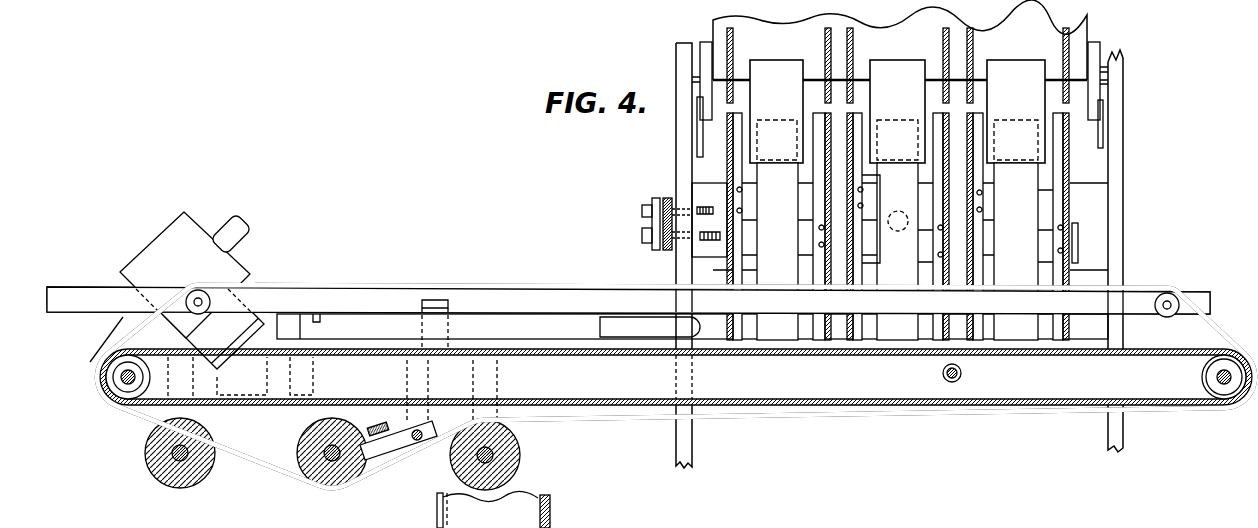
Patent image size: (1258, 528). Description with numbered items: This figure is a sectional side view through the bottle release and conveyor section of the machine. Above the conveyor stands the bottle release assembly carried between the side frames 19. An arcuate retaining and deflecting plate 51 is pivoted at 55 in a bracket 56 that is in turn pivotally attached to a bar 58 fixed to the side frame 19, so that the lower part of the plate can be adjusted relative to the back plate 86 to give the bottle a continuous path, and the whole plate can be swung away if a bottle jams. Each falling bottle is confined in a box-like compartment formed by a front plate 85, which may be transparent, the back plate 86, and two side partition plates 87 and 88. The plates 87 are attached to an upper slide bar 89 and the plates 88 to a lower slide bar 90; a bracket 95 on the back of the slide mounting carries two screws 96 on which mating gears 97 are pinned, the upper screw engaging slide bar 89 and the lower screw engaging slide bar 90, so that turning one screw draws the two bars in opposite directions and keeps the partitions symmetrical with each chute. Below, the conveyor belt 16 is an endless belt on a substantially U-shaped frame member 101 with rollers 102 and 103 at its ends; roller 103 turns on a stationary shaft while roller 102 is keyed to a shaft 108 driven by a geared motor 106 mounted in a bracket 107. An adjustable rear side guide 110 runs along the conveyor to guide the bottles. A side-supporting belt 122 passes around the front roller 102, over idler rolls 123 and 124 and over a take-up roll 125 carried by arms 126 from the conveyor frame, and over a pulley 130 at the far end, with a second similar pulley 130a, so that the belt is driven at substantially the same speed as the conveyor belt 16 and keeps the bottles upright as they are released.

The conveyor belt 16 is at (812, 348).
The side frame 19 is at (682, 73).
The arcuate retaining and deflecting plate 51 is at (1006, 48).
The pivot 55 is at (1107, 55).
The bracket 56 is at (1100, 90).
The bar 58 is at (697, 128).
The front plate 85 is at (553, 513).
The back plate 86 is at (782, 273).
The side plate 87 is at (733, 248).
The side plate 88 is at (827, 197).
The upper slide bar 89 is at (710, 188).
The lower slide bar 90 is at (1075, 248).
The bracket 95 is at (642, 207).
The screws 96 is at (642, 237).
The mating gears 97 is at (668, 197).
The frame member 101 is at (1017, 387).
The roller 102 is at (110, 403).
The roller 103 is at (1200, 382).
The geared motor 106 is at (148, 243).
The bracket 107 is at (237, 343).
The shaft 108 is at (112, 383).
The rear side guide 110 is at (68, 290).
The belt 122 is at (382, 285).
The idler roll 123 is at (188, 488).
The idler roll 124 is at (520, 453).
The take-up roll 125 is at (338, 481).
The arms 126 is at (397, 444).
The pulley 130 is at (200, 291).
The belt pulley 130a is at (1173, 299).